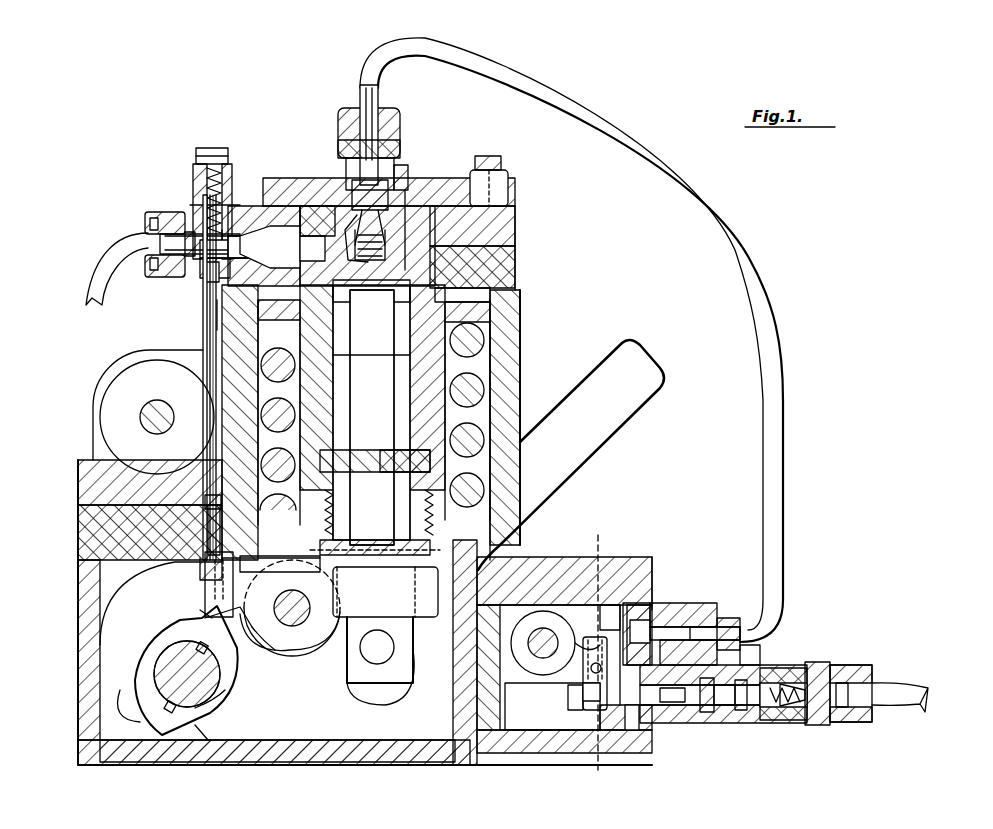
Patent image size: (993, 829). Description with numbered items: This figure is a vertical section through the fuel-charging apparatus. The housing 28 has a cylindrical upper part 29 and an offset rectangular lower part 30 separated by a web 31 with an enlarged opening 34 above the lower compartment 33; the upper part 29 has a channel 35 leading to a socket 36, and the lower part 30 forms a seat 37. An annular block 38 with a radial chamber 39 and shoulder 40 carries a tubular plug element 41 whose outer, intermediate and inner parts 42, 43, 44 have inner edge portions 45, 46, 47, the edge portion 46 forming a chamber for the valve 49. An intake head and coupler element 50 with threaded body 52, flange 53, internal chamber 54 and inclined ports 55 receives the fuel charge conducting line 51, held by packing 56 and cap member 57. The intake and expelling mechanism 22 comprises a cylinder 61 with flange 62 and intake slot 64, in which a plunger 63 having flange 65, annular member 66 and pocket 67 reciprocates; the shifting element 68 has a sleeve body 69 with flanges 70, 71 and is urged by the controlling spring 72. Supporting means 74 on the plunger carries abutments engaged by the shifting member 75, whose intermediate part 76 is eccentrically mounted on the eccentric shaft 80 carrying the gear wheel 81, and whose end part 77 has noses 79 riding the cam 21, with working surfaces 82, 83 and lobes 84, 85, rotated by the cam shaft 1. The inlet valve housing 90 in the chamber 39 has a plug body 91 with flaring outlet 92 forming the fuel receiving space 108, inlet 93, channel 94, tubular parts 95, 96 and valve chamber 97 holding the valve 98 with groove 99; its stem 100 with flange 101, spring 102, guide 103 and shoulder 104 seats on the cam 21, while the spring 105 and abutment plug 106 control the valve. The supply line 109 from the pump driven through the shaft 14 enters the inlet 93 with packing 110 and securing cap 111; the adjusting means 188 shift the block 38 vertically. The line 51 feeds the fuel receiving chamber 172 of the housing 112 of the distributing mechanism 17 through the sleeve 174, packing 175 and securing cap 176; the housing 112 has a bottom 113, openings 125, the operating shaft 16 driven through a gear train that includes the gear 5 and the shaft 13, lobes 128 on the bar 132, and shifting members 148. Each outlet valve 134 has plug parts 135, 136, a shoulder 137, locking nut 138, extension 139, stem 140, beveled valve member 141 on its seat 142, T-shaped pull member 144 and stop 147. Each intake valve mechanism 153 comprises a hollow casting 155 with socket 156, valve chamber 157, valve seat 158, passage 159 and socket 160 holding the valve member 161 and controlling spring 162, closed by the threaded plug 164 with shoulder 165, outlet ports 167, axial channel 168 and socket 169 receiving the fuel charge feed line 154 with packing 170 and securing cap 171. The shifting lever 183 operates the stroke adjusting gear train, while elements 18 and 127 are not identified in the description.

The cam wheel 1 is at (165, 676).
The section line 5 is at (590, 530).
The member 13 is at (352, 670).
The shaft 14 is at (145, 415).
The housing 16 is at (558, 570).
The housing wall 17 is at (650, 580).
The block 18 is at (385, 592).
The base 21 is at (210, 740).
The chamber 22 is at (525, 292).
The cylinder wall 28 is at (522, 368).
The cylinder 29 is at (520, 352).
The housing 30 is at (100, 655).
The plate 31 is at (305, 580).
The base plate 33 is at (258, 710).
The cam 34 is at (298, 578).
The rod 35 is at (210, 341).
The wall 36 is at (100, 548).
The spring 37 is at (480, 370).
The filter block 38 is at (516, 235).
The cover 39 is at (238, 205).
The head 40 is at (516, 215).
The top plate 41 is at (420, 178).
The passage 42 is at (285, 200).
The valve 43 is at (345, 215).
The inner wall 44 is at (470, 298).
The bore 45 is at (405, 185).
The screw 46 is at (447, 178).
The screw head 47 is at (456, 185).
The piston head 49 is at (345, 310).
The plug 50 is at (352, 98).
The tube 51 is at (612, 125).
The valve seat 52 is at (352, 140).
The bushing 53 is at (398, 175).
The tube wall 54 is at (345, 120).
The valve stem 55 is at (352, 200).
The tube bore 56 is at (360, 130).
The nut 57 is at (398, 150).
The spring seat 61 is at (495, 340).
The wall 62 is at (500, 310).
The piston 63 is at (375, 412).
The sleeve 64 is at (315, 295).
The piston ring 65 is at (366, 462).
The spring 66 is at (236, 200).
The piston foot 67 is at (352, 540).
The spring 68 is at (300, 438).
The spring 69 is at (305, 292).
The piston rod 70 is at (372, 352).
The piston skirt 71 is at (412, 482).
The spring 72 is at (258, 458).
The pin 74 is at (392, 647).
The lever 75 is at (278, 640).
The pin 76 is at (272, 596).
The follower 77 is at (210, 580).
The arm 79 is at (206, 612).
The cam 80 is at (292, 626).
The wall 81 is at (296, 200).
The cam lobe 82 is at (160, 662).
The cam body 83 is at (230, 705).
The cam 84 is at (215, 610).
The lobe 85 is at (140, 718).
The screw 90 is at (192, 200).
The passage 91 is at (182, 212).
The valve chamber 92 is at (300, 250).
The pipe 93 is at (178, 270).
The seal 94 is at (192, 278).
The screw body 95 is at (195, 190).
The bushing 96 is at (200, 275).
The rod 97 is at (218, 300).
The bore 98 is at (212, 290).
The plate 99 is at (192, 190).
The rod 100 is at (213, 383).
The wall 101 is at (200, 565).
The block 102 is at (100, 540).
The plate 103 is at (258, 578).
The guide 104 is at (196, 555).
The spring 105 is at (226, 180).
The screw head 106 is at (205, 150).
The housing 108 is at (345, 330).
The pipe 109 is at (105, 255).
The fitting 110 is at (150, 220).
The nut 111 is at (150, 215).
The base 112 is at (515, 765).
The bushing 113 is at (620, 610).
The lever 125 is at (568, 690).
The bearing 127 is at (530, 618).
The shaft 128 is at (560, 560).
The link 132 is at (420, 705).
The sleeve 134 is at (690, 723).
The bore 135 is at (648, 760).
The seal 136 is at (690, 723).
The bushing 137 is at (662, 625).
The body 138 is at (665, 723).
The ring 139 is at (705, 723).
The passage 140 is at (600, 782).
The pin 141 is at (583, 750).
The plate 142 is at (630, 753).
The spring 144 is at (600, 718).
The fitting 147 is at (745, 645).
The stop 148 is at (568, 706).
The valve 153 is at (795, 723).
The hose 154 is at (925, 690).
The body 155 is at (775, 668).
The seat 156 is at (738, 723).
The passage 157 is at (800, 660).
The nut 158 is at (745, 650).
The ring 159 is at (755, 723).
The nut 160 is at (818, 663).
The disc 161 is at (762, 723).
The passage 162 is at (810, 662).
The washer 164 is at (848, 725).
The nut 165 is at (845, 665).
The spring 167 is at (788, 723).
The stem 168 is at (826, 725).
The seal 169 is at (838, 725).
The sleeve 170 is at (875, 720).
The collar 171 is at (872, 728).
The wall 172 is at (470, 714).
The cover 174 is at (648, 555).
The bushing 175 is at (710, 603).
The plate 176 is at (690, 603).
The lever 183 is at (615, 415).
The filter 188 is at (520, 262).